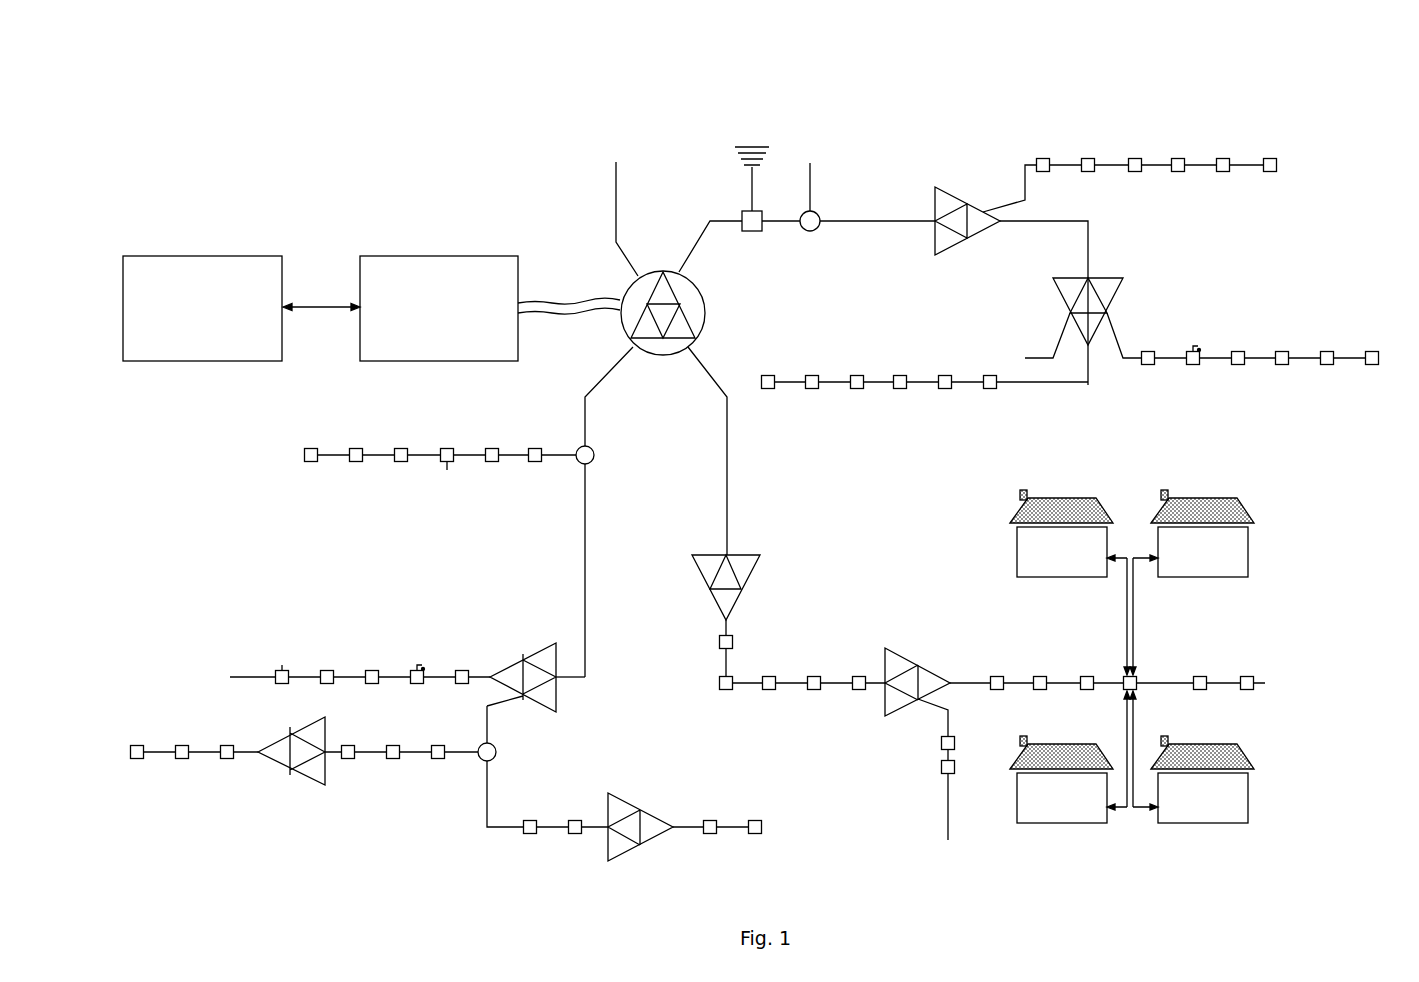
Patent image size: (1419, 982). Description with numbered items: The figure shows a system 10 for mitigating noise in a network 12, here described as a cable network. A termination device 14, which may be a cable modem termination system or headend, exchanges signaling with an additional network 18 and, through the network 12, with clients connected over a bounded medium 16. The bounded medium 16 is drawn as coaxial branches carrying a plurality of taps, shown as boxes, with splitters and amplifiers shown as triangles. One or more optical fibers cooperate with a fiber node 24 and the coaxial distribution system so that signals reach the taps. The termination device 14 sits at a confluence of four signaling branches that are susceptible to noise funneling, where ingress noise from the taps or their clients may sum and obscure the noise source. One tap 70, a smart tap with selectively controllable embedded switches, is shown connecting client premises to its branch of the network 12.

The system 10 is at (1094, 81).
The network 12 is at (476, 211).
The termination device 14 is at (390, 255).
The bounded medium 16 is at (816, 311).
The additional network 18 is at (177, 255).
The fiber node 24 is at (705, 318).
The tap 70 is at (1138, 679).